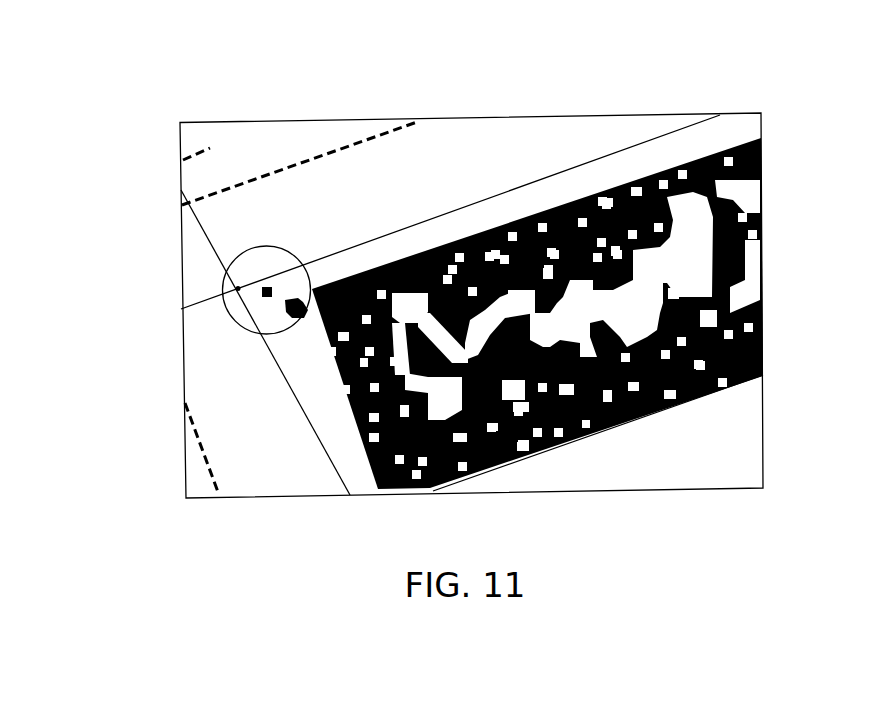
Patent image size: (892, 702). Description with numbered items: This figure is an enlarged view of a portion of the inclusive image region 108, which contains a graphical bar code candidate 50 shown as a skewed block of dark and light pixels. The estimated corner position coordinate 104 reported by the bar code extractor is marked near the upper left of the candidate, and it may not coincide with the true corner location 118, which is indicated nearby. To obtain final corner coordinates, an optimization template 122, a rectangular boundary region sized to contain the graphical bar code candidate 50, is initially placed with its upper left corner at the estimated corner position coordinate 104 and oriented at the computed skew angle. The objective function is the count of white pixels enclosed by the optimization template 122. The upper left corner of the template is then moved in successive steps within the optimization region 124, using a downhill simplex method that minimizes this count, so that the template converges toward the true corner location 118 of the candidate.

The inclusive image region 108 is at (503, 138).
The graphical bar code candidate 50 is at (613, 431).
The optimization template 122 is at (417, 222).
The optimization region 124 is at (265, 337).
The true corner location 118 is at (266, 278).
The estimated corner position coordinate 104 is at (238, 288).